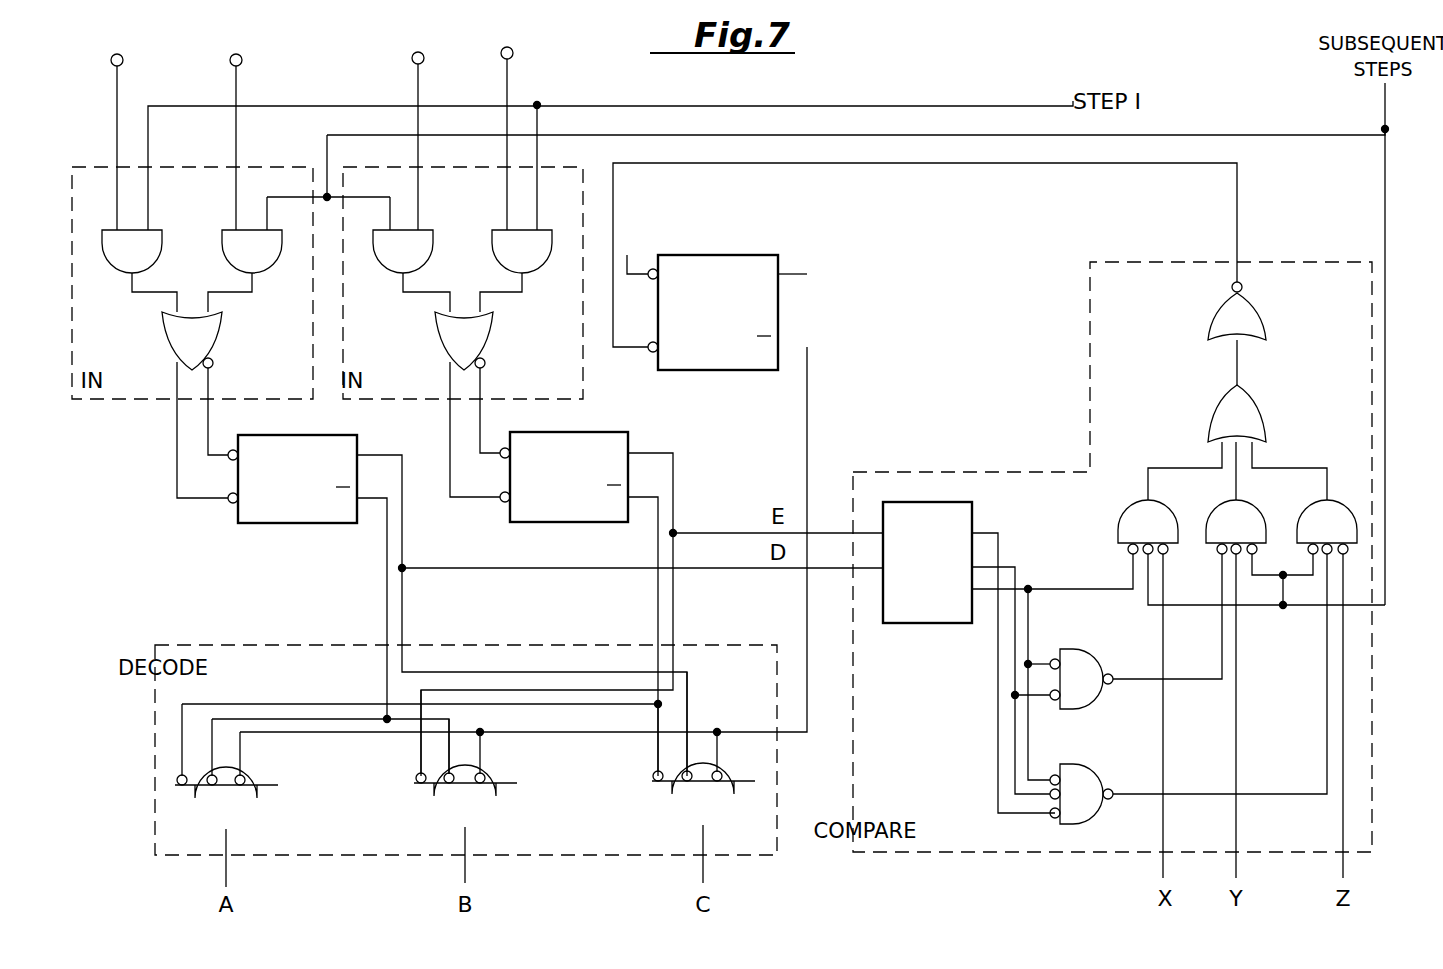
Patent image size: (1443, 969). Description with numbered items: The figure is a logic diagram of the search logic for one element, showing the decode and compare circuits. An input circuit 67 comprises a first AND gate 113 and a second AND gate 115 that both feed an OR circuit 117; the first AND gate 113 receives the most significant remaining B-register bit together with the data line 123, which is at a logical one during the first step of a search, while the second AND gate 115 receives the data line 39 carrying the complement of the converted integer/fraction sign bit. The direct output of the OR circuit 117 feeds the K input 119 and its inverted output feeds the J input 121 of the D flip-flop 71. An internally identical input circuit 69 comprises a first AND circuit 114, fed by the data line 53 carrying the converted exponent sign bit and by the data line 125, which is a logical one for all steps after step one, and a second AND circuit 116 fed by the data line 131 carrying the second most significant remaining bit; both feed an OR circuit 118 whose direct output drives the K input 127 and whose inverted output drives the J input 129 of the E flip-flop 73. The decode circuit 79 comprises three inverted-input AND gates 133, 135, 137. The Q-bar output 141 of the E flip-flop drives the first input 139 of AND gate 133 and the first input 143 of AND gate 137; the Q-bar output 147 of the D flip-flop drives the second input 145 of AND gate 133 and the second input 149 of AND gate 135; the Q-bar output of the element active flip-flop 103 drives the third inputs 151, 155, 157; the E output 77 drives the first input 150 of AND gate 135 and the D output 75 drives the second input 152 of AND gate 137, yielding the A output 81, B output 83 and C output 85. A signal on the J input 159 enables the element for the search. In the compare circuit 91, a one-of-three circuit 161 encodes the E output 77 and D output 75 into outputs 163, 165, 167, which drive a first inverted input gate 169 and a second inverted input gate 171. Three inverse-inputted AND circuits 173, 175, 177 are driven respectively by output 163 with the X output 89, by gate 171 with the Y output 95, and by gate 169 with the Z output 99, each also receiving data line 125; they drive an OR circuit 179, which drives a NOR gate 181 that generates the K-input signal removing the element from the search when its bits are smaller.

The data line 123 is at (121, 82).
The data line 39 is at (240, 78).
The data line 53 is at (414, 71).
The data line 131 is at (511, 76).
The data line 125 is at (1380, 105).
The first AND gate 113 is at (120, 268).
The second AND gate 115 is at (265, 268).
The first AND circuit 114 is at (391, 268).
The second AND circuit 116 is at (534, 268).
The OR circuit 117 is at (216, 339).
The OR circuit 118 is at (487, 339).
The input circuit 67 is at (130, 400).
The input circuit 69 is at (583, 380).
The J input 121 is at (222, 452).
The K input 119 is at (206, 505).
The D flip-flop 71 is at (282, 527).
The K input 127 is at (493, 450).
The J input 129 is at (479, 505).
The E flip-flop 73 is at (560, 524).
The E output 77 is at (650, 456).
The D output 75 is at (727, 570).
The Q-bar output 147 is at (373, 518).
The Q-bar output 141 is at (643, 510).
The one-of-three circuit 161 is at (616, 232).
The J input 159 is at (640, 262).
The element active flip-flop 103 is at (720, 257).
The decode circuit 79 is at (232, 645).
The first input 139 is at (178, 737).
The second input 145 is at (207, 762).
The third input 151 is at (243, 760).
The AND gate 133 is at (250, 809).
The first input 150 is at (419, 752).
The second input 149 is at (447, 760).
The third input 155 is at (483, 757).
The AND gate 135 is at (490, 807).
The first input 143 is at (655, 750).
The second input 152 is at (684, 760).
The third input 157 is at (722, 758).
The AND gate 137 is at (724, 804).
The A output 81 is at (232, 877).
The B output 83 is at (470, 876).
The C output 85 is at (708, 876).
The compare circuit 91 is at (968, 854).
The output 167 is at (990, 533).
The output 165 is at (1012, 567).
The output 163 is at (988, 600).
The second inverted input gate 171 is at (1100, 668).
The first inverted input gate 169 is at (1100, 776).
The inverse inputted AND circuit 173 is at (1131, 500).
The inverse inputted AND circuit 175 is at (1219, 501).
The inverse inputted AND circuit 177 is at (1338, 500).
The OR circuit 179 is at (1268, 406).
The NOR gate 181 is at (1268, 312).
The X output 89 is at (1160, 876).
The Y output 95 is at (1240, 876).
The Z output 99 is at (1347, 876).